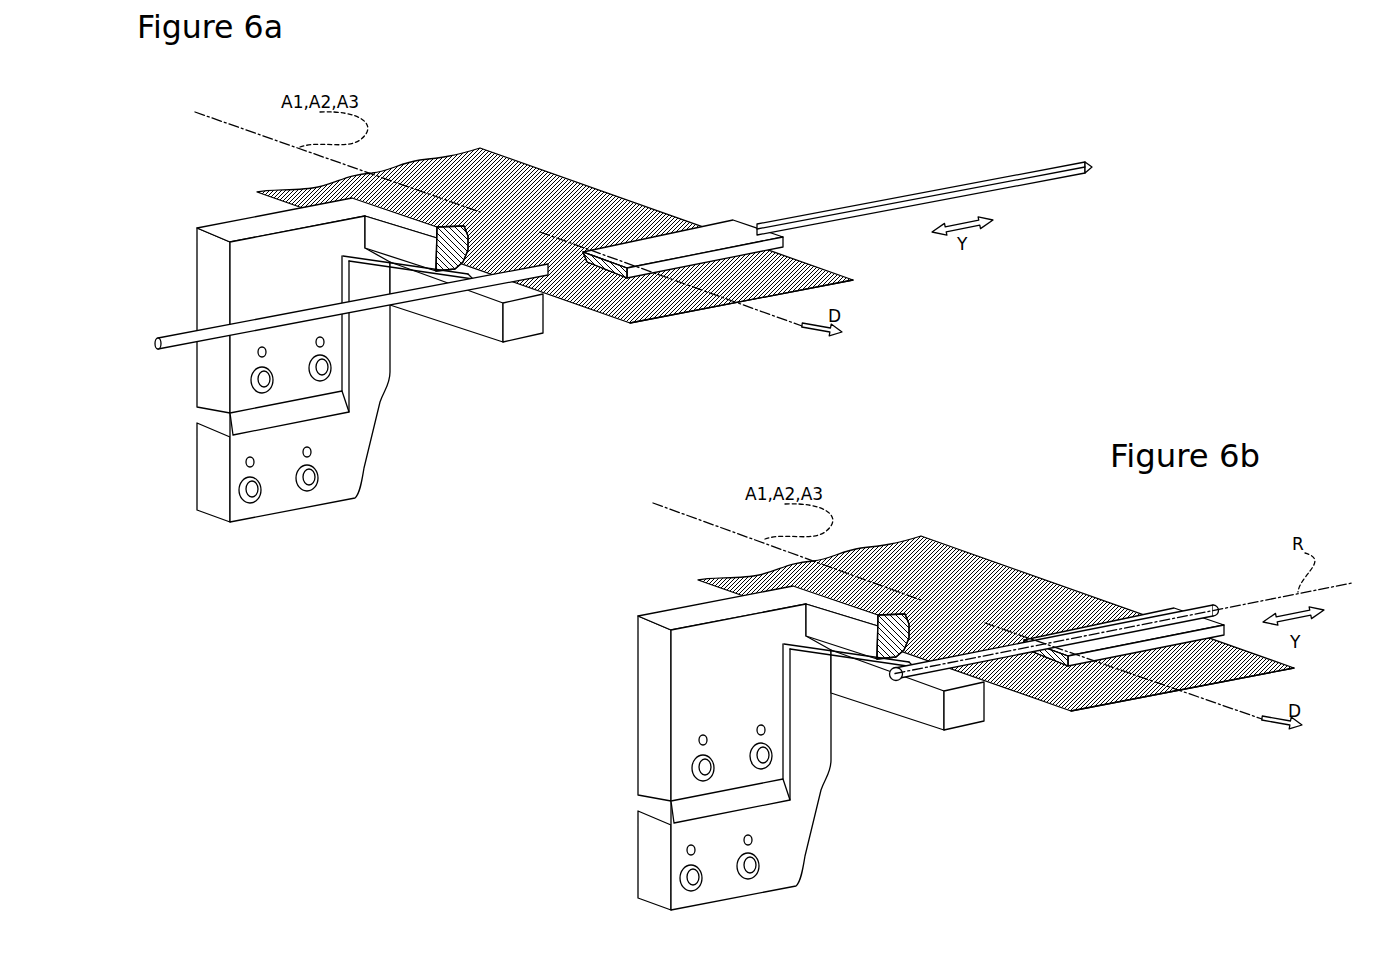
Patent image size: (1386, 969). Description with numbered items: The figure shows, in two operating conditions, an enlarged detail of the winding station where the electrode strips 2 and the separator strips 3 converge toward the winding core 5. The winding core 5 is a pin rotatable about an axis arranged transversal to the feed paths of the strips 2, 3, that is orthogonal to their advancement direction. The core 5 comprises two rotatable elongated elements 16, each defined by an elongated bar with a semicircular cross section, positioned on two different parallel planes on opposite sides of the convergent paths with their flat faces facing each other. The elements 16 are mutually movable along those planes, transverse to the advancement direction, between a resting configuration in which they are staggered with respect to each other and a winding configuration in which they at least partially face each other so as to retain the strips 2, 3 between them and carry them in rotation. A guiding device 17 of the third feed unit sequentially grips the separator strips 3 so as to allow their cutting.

In FIG. 6A, the electrode strip 2 is at (540, 165).
In FIG. 6B, the electrode strip 2 is at (1000, 565).
In FIG. 6A, the separator strip 3 is at (741, 301).
In FIG. 6B, the separator strip 3 is at (1182, 689).
In FIG. 6A, the winding core 5 is at (988, 175).
In FIG. 6B, the winding core 5 is at (1145, 572).
In FIG. 6A, the rotatable elongated element 16 is at (160, 337).
In FIG. 6B, the rotatable elongated element 16 is at (1196, 604).
In FIG. 6A, the guiding device 17 is at (460, 350).
In FIG. 6B, the guiding device 17 is at (924, 741).